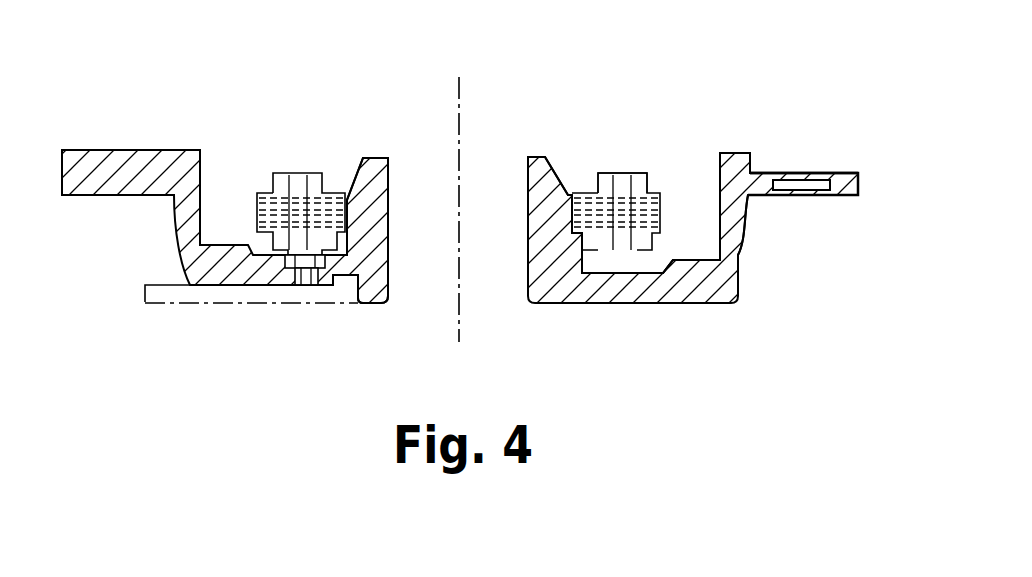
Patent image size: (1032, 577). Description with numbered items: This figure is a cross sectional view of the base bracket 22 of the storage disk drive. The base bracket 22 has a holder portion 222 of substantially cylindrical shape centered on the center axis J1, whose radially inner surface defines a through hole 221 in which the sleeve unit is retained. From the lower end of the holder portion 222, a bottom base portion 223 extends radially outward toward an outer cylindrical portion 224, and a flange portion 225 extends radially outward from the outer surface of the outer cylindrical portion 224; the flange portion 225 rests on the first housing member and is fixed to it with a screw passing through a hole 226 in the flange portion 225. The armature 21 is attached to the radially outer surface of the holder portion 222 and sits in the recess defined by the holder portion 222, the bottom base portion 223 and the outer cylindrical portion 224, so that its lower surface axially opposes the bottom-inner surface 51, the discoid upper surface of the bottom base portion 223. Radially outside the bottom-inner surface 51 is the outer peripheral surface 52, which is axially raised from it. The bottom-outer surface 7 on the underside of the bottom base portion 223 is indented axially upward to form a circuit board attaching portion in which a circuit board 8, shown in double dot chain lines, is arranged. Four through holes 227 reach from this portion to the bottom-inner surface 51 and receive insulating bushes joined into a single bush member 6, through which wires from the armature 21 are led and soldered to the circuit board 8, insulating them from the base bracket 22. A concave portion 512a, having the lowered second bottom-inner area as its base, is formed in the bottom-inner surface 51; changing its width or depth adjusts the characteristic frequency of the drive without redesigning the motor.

The base bracket 22 is at (103, 62).
The armature 21 is at (300, 195).
The through holes 227 is at (293, 258).
The bush member 6 is at (303, 290).
The circuit board 8 is at (168, 283).
The center axis J1 is at (452, 107).
The through hole 221 is at (505, 113).
The holder portion 222 is at (547, 157).
The bottom base portion 223 is at (682, 288).
The outer cylindrical portion 224 is at (732, 220).
The flange portion 225 is at (838, 185).
The hole 226 is at (788, 172).
The bottom-outer surface 7 is at (600, 307).
The bottom-inner surface 51 is at (638, 268).
The concave portion 512a is at (605, 268).
The outer peripheral surface 52 is at (683, 260).